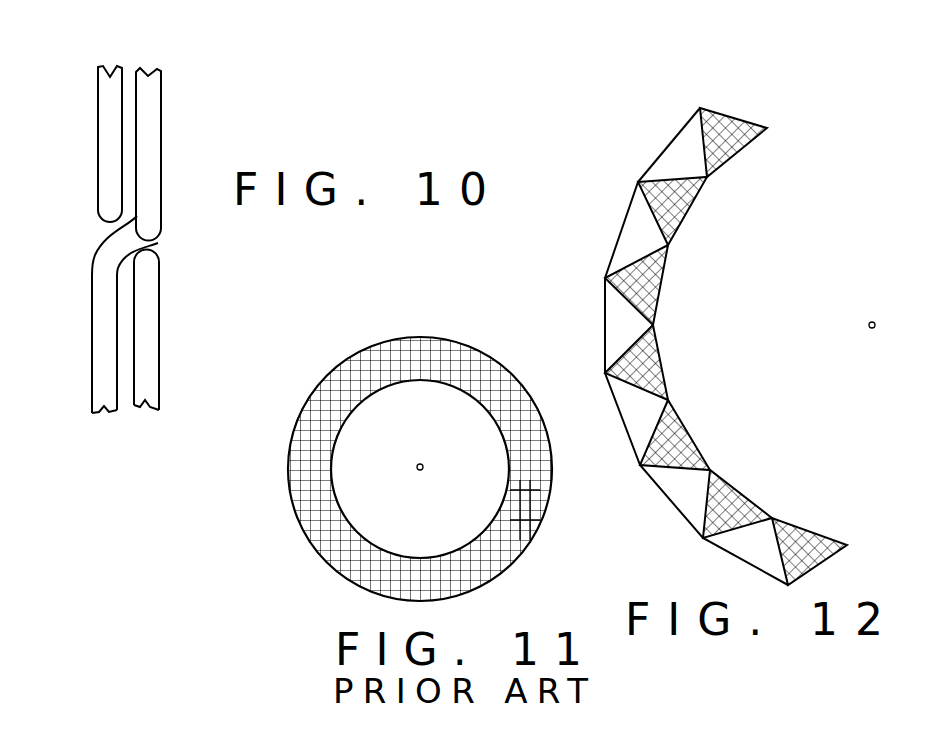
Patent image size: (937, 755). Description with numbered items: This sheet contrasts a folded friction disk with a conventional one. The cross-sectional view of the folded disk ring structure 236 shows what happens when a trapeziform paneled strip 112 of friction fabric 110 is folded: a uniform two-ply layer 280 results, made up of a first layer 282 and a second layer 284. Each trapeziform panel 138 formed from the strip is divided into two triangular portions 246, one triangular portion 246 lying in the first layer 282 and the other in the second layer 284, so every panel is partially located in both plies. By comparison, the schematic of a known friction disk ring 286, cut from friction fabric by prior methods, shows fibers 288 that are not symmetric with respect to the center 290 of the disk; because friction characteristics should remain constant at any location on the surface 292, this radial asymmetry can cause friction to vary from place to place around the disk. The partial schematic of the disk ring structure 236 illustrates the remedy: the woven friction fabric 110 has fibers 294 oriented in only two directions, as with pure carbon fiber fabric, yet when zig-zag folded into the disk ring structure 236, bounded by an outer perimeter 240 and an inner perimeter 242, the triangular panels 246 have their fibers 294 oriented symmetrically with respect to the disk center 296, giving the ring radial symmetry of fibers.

In FIG. 11, the friction fabric 110 is at (485, 375).
In FIG. 12, the friction fabric 110 is at (730, 113).
In FIG. 10, the trapeziform paneled strip 112 is at (109, 77).
In FIG. 10, the trapeziform panel 138 is at (108, 100).
In FIG. 10, the disk ring structure 236 is at (92, 70).
In FIG. 12, the disk ring structure 236 is at (668, 132).
In FIG. 12, the outer perimeter 240 is at (622, 232).
In FIG. 12, the inner perimeter 242 is at (662, 295).
In FIG. 10, the triangular portion 246 is at (148, 167).
In FIG. 12, the triangular portion 246 is at (628, 323).
In FIG. 10, the two-ply layer 280 is at (143, 71).
In FIG. 10, the first layer 282 is at (108, 157).
In FIG. 10, the second layer 284 is at (148, 97).
In FIG. 11, the friction disk ring 286 is at (380, 342).
In FIG. 11, the fibers 288 is at (539, 524).
In FIG. 11, the center 290 is at (420, 464).
In FIG. 11, the surface 292 is at (360, 562).
In FIG. 12, the fibers 294 is at (665, 268).
In FIG. 12, the center 296 is at (871, 322).